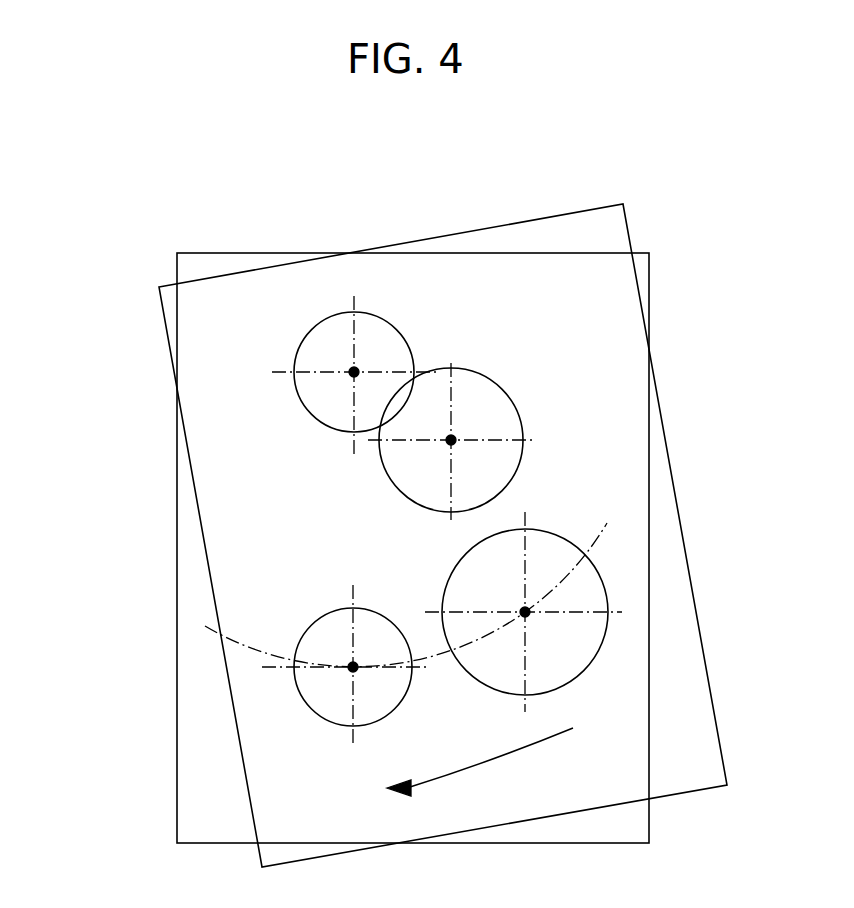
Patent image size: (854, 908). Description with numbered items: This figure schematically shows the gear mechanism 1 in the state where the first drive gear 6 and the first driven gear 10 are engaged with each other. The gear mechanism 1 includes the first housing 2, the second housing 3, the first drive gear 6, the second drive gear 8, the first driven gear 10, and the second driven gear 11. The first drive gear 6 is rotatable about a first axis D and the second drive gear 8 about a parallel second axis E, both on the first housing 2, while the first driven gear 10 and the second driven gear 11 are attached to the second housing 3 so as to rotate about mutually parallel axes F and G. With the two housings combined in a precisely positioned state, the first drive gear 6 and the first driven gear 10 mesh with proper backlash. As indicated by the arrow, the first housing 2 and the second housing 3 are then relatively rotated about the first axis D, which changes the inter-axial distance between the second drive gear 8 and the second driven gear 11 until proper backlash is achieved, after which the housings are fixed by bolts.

The gear mechanism 1 is at (108, 200).
The first housing 2 is at (177, 563).
The second housing 3 is at (237, 727).
The first drive gear 6 is at (323, 320).
The second drive gear 8 is at (330, 610).
The first driven gear 10 is at (492, 380).
The second driven gear 11 is at (553, 532).